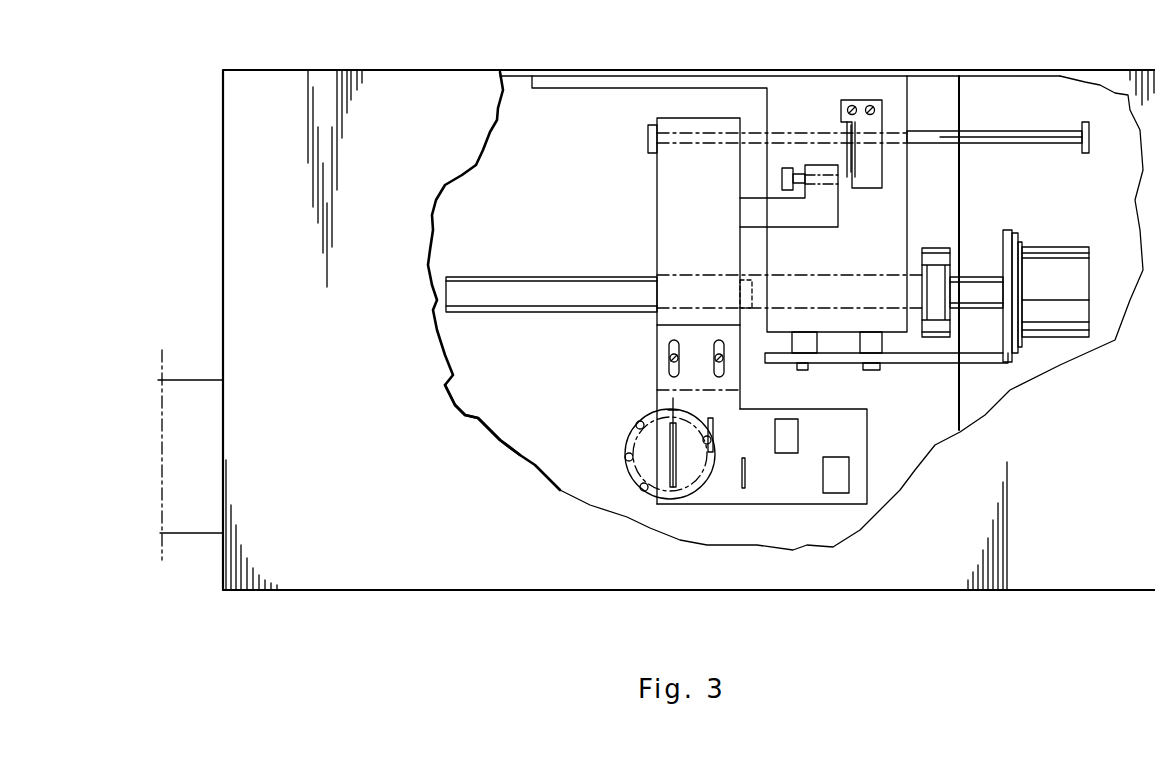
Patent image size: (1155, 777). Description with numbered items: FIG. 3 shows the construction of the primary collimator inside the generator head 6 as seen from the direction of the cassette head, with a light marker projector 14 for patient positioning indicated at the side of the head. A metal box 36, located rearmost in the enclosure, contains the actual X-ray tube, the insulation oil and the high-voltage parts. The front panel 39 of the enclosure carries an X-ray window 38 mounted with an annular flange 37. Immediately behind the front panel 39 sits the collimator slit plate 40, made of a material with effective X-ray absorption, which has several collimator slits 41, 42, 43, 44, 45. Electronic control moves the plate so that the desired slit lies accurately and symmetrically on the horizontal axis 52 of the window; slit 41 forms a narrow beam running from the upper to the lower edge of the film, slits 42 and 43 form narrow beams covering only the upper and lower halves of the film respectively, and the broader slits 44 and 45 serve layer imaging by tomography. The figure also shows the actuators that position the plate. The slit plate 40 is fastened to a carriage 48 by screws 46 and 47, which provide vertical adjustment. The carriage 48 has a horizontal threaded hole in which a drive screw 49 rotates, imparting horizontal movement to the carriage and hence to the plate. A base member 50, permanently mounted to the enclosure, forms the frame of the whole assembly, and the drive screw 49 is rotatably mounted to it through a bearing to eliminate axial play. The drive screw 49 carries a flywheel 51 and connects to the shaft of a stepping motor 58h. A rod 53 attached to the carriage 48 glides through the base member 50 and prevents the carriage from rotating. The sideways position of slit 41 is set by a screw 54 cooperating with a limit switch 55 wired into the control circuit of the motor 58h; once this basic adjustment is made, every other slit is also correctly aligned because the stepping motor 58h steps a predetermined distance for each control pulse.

The generator head 6 is at (223, 122).
The light marker projector 14 is at (170, 378).
The metal box 36 is at (947, 210).
The annular flange 37 is at (635, 450).
The X-ray window 38 is at (645, 448).
The front panel 39 is at (473, 445).
The collimator slit plate 40 is at (813, 435).
The collimator slit 41 is at (668, 468).
The collimator slit 42 is at (713, 422).
The collimator slit 43 is at (750, 487).
The collimator slit 44 is at (793, 432).
The collimator slit 45 is at (838, 487).
The screw 46 is at (672, 358).
The screw 47 is at (713, 350).
The carriage 48 is at (667, 177).
The drive screw 49 is at (493, 277).
The base member 50 is at (900, 192).
The flywheel 51 is at (930, 323).
The horizontal axis 52 is at (672, 403).
The rod 53 is at (1005, 137).
The screw 54 is at (782, 167).
The limit switch 55 is at (872, 185).
The stepping motor 58h is at (1072, 268).